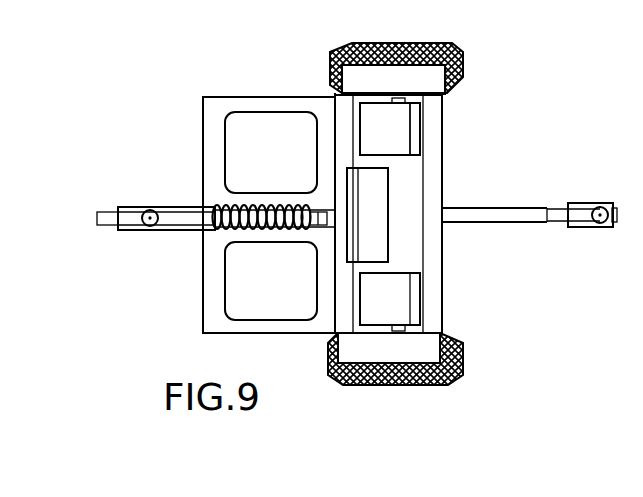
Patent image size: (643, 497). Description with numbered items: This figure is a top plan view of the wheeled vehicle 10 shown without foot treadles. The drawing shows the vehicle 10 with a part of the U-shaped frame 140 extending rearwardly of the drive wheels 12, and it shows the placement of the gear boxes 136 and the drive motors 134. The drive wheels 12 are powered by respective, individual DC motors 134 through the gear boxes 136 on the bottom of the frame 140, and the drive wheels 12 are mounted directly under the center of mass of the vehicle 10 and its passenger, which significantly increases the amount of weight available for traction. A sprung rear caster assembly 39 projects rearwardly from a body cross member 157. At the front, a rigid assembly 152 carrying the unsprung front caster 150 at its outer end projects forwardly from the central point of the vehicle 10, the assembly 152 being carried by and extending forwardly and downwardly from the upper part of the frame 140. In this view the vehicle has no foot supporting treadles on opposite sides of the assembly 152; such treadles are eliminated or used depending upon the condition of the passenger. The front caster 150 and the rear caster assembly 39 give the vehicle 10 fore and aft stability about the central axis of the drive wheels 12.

The vehicle 10 is at (314, 353).
The drive wheels 12 is at (462, 60).
The sprung rear caster assembly 39 is at (237, 205).
The DC motors 134 is at (402, 142).
The gear boxes 136 is at (418, 122).
The U-shaped frame 140 is at (238, 340).
The front caster 150 is at (588, 205).
The rigid assembly 152 is at (530, 217).
The body cross member 157 is at (378, 218).